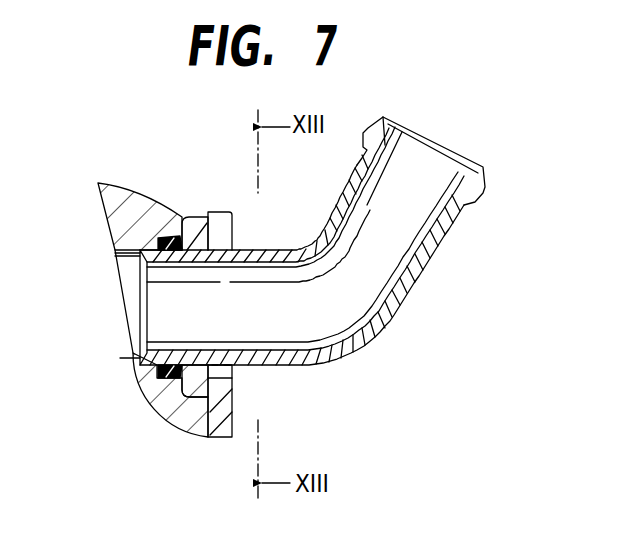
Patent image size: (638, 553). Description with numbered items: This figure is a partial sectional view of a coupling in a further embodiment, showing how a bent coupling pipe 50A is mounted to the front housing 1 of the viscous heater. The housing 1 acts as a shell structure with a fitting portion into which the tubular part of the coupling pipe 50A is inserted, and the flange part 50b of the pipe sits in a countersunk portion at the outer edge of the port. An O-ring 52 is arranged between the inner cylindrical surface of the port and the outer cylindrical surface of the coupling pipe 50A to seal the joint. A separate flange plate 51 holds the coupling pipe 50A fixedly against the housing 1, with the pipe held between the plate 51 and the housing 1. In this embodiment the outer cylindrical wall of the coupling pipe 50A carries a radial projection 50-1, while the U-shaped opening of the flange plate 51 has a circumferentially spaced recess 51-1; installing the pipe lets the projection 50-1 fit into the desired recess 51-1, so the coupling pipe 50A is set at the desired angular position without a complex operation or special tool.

The front housing 1 is at (122, 204).
The coupling pipe 50A is at (337, 206).
The flange part 50b is at (192, 228).
The flange plate 51 is at (225, 228).
The O-ring 52 is at (172, 237).
The radial projection 50-1 is at (230, 371).
The recess 51-1 is at (230, 378).